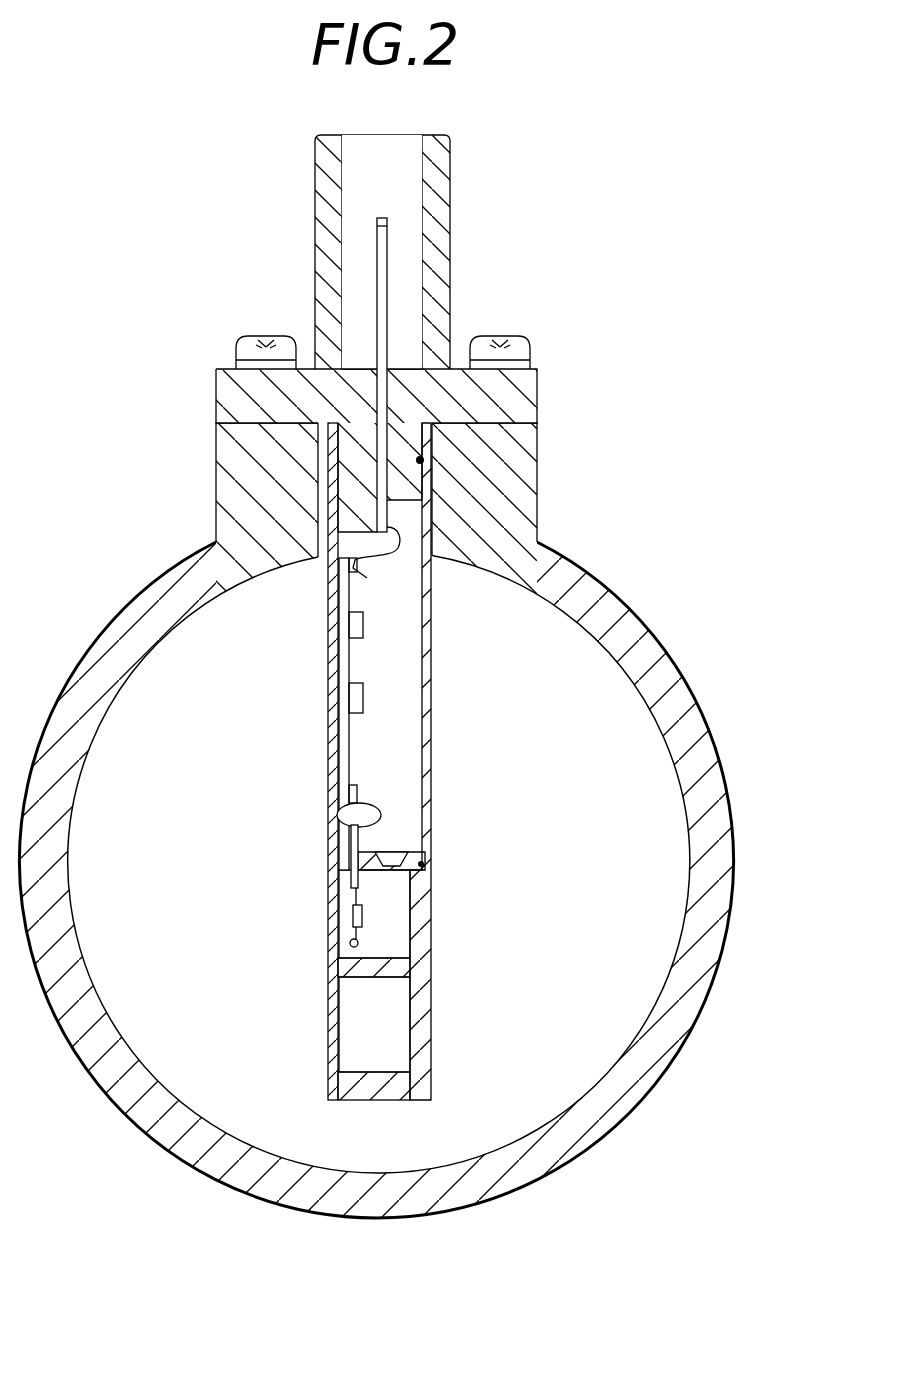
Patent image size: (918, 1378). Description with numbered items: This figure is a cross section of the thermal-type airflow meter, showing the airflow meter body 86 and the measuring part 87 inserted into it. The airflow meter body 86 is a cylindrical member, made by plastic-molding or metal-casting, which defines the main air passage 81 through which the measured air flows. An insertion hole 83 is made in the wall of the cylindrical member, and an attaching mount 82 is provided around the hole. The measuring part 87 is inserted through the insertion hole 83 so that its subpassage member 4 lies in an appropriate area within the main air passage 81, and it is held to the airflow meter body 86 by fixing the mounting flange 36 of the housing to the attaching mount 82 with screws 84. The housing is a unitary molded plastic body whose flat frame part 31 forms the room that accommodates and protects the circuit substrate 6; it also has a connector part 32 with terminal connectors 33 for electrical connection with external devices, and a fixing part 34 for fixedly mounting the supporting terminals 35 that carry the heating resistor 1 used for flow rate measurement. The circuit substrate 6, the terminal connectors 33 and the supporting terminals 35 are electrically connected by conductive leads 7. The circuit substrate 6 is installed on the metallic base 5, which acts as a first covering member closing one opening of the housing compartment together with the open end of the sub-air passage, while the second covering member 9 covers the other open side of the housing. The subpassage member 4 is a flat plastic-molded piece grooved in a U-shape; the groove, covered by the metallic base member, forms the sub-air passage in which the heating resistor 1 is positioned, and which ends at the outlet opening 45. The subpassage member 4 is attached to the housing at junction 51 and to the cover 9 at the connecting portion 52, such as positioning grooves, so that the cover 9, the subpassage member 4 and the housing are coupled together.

The heating resistor 1 is at (352, 926).
The subpassage member 4 is at (422, 960).
The metallic base 5 is at (333, 713).
The circuit substrate 6 is at (345, 750).
The conductive leads 7 is at (388, 590).
The second covering member 9 is at (433, 757).
The frame part 31 is at (397, 663).
The connector part 32 is at (425, 233).
The terminal connectors 33 is at (388, 242).
The fixing part 34 is at (345, 833).
The supporting terminals 35 is at (351, 866).
The mounting flange 36 is at (520, 387).
The outlet opening 45 is at (328, 1035).
The junction 51 is at (430, 875).
The connecting portion 52 is at (425, 460).
The main air passage 81 is at (570, 1047).
The attaching mount 82 is at (232, 419).
The insertion hole 83 is at (433, 447).
The screws 84 is at (500, 340).
The airflow meter body 86 is at (645, 658).
The measuring part 87 is at (382, 244).